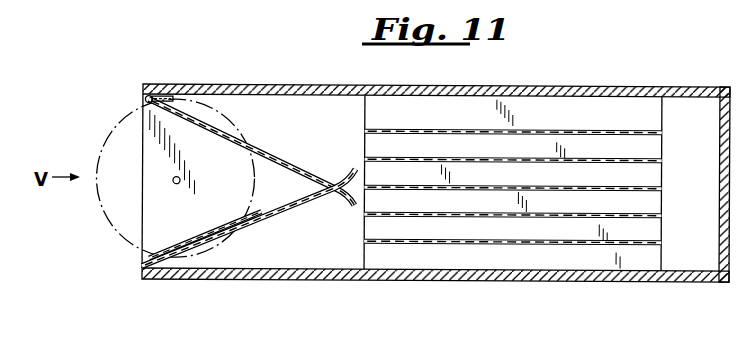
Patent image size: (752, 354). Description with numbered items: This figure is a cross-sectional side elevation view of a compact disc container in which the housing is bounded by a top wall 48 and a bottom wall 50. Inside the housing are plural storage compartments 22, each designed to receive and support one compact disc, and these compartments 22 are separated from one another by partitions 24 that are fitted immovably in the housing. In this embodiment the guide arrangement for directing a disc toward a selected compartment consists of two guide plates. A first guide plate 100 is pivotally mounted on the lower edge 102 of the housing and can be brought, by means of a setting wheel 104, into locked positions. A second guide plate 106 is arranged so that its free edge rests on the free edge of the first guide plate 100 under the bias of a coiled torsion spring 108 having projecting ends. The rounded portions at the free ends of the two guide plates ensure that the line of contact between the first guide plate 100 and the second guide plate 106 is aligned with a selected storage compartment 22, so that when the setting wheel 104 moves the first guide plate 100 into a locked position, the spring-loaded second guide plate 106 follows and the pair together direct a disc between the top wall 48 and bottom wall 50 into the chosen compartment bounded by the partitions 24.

The storage compartments 22 is at (433, 232).
The partitions 24 is at (490, 216).
The top wall 48 is at (648, 87).
The bottom wall 50 is at (520, 273).
The first guide plate 100 is at (283, 227).
The lower edge 102 is at (143, 260).
The setting wheel 104 is at (143, 107).
The second guide plate 106 is at (248, 141).
The coiled torsion spring 108 is at (178, 106).